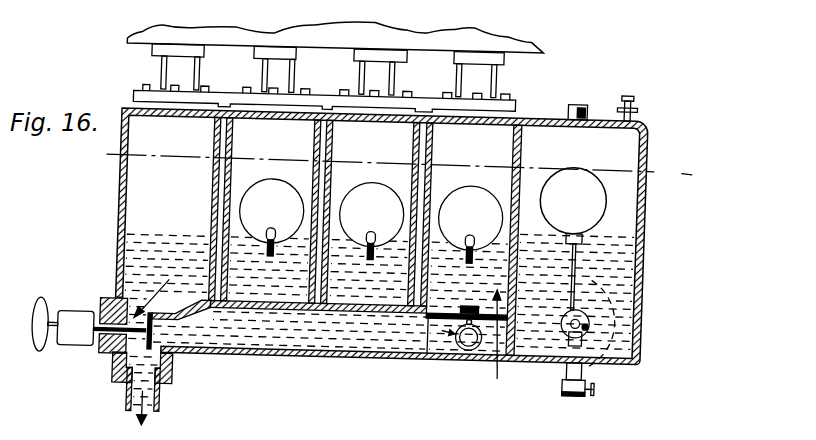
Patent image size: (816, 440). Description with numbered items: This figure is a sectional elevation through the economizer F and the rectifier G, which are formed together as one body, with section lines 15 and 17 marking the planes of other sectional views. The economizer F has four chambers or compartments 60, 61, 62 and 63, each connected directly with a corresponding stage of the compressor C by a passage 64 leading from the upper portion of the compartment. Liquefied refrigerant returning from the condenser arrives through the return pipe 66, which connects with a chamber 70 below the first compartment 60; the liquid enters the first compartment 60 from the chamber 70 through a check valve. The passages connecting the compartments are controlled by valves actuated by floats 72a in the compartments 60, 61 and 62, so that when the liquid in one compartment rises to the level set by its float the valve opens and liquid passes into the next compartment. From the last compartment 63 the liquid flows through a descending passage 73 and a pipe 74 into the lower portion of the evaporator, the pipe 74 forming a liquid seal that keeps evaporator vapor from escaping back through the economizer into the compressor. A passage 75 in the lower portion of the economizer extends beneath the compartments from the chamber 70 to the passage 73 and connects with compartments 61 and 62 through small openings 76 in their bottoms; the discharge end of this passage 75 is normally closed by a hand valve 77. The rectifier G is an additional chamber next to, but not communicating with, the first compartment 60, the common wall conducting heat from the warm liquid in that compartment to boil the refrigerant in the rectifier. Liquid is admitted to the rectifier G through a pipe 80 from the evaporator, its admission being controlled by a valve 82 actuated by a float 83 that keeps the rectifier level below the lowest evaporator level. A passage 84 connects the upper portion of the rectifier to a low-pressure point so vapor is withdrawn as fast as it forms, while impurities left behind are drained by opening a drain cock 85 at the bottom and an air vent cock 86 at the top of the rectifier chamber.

The compressor C is at (187, 29).
The passages 64 is at (261, 58).
The last compartment 63 is at (168, 220).
The compartment 62 is at (271, 212).
The compartment 61 is at (371, 215).
The first compartment 60 is at (471, 223).
The float 83 is at (576, 257).
The floats 72a is at (371, 221).
The section line 15 is at (386, 163).
The pipe or passage 84 is at (576, 95).
The air vent cock 86 is at (629, 87).
The rectifier G is at (625, 199).
The pipe 80 is at (591, 315).
The valve 82 is at (568, 334).
The hand valve 77 is at (108, 354).
The descending passage 73 is at (126, 361).
The pipe 74 is at (172, 386).
The small openings 76 is at (273, 302).
The economizer F is at (321, 360).
The passage 75 is at (348, 337).
The chamber 70 is at (439, 346).
The pipe 66 is at (468, 342).
The section line 17 is at (484, 331).
The drain cock 85 is at (588, 371).